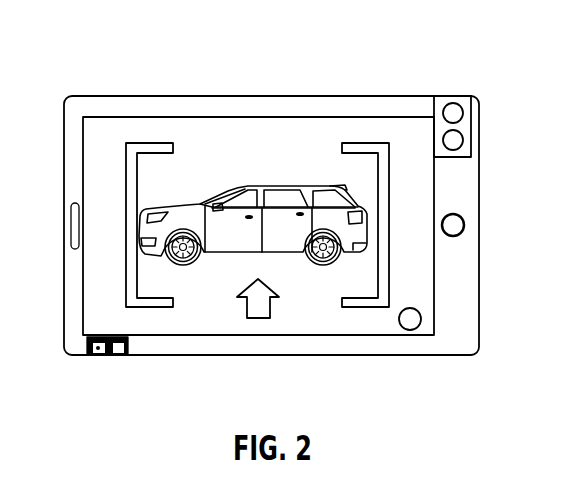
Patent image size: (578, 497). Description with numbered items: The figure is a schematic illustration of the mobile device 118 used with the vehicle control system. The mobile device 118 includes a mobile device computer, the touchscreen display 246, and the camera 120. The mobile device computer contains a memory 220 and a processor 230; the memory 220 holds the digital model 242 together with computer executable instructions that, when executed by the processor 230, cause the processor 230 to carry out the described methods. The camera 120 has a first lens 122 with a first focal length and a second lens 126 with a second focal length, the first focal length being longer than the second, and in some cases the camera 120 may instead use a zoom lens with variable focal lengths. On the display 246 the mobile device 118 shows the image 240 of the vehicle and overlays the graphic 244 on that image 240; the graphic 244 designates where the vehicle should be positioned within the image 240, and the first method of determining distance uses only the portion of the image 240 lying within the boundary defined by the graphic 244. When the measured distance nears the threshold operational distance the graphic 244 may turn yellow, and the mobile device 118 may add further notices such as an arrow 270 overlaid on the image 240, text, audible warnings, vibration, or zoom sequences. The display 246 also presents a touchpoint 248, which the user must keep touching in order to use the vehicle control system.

The mobile device 118 is at (225, 66).
The camera 120 is at (478, 127).
The first lens 122 is at (462, 143).
The second lens 126 is at (453, 103).
The memory 220 is at (118, 351).
The processor 230 is at (130, 342).
The image 240 is at (263, 132).
The digital model 242 is at (97, 355).
The graphic 244 is at (139, 143).
The touchscreen display 246 is at (333, 117).
The touchpoint 248 is at (410, 330).
The arrow 270 is at (271, 313).